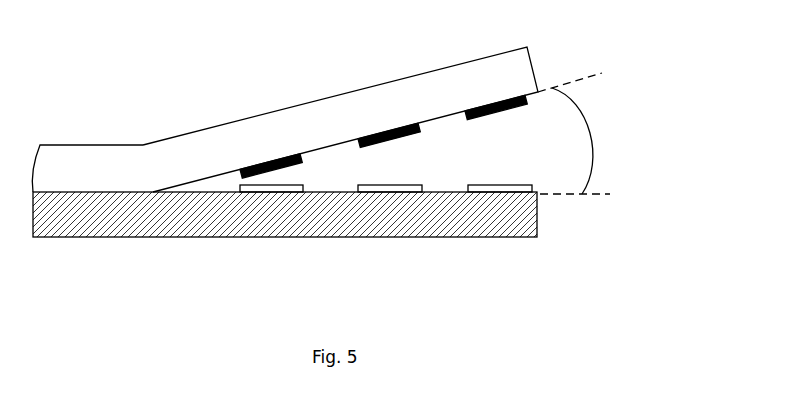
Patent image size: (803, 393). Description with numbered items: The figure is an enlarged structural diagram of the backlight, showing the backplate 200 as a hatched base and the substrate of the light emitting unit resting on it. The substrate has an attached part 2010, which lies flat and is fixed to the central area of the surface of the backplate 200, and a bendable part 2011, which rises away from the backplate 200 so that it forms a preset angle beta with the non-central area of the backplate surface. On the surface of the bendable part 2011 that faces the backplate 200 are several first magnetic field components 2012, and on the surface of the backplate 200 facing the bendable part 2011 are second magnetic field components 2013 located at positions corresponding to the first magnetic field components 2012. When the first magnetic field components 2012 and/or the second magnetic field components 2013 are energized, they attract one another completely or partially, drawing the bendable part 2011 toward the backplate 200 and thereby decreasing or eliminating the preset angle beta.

The backplate 200 is at (70, 218).
The attached part 2010 is at (96, 145).
The bendable part 2011 is at (197, 160).
The first magnetic field component 2012 is at (375, 132).
The second magnetic field component 2013 is at (395, 187).